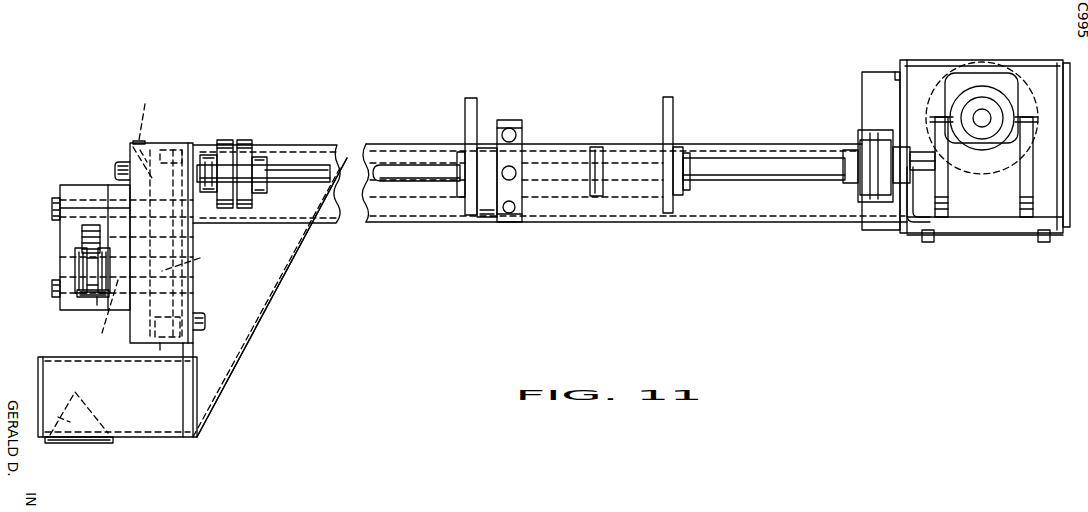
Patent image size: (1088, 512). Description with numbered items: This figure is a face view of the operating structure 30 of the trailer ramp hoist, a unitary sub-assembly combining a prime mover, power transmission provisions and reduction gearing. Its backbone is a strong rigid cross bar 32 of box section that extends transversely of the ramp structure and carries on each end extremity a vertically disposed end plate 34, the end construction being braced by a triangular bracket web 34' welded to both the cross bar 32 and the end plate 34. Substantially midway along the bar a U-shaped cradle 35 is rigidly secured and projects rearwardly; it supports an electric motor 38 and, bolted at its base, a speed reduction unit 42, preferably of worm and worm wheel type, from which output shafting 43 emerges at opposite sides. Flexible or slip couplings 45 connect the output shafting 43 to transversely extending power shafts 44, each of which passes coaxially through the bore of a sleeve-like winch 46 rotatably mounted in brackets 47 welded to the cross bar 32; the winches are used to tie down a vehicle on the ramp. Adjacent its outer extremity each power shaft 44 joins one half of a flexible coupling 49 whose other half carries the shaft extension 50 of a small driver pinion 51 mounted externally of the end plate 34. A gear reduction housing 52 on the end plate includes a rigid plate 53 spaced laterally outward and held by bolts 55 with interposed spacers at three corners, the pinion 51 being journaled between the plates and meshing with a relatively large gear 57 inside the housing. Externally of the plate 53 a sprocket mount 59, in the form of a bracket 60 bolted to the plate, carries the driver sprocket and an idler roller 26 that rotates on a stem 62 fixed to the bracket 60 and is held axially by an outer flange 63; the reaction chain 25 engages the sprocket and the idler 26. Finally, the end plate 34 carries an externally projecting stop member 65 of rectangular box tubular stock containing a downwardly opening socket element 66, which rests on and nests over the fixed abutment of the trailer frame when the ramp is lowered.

The reaction chain 25 is at (80, 238).
The idler roller 26 is at (98, 296).
The operating structure 30 is at (758, 106).
The cross bar 32 is at (606, 224).
The end plate 34 is at (146, 390).
The triangular bracket web 34' is at (270, 291).
The cradle 35 is at (898, 72).
The electric motor 38 is at (1022, 72).
The speed reduction unit 42 is at (975, 217).
The output shafting 43 is at (923, 178).
The power shaft 44 is at (420, 183).
The flexible coupling 45 is at (863, 208).
The sleeve-like winch 46 is at (560, 203).
The bracket 47 is at (468, 114).
The flexible coupling 49 is at (252, 143).
The shaft extension 50 is at (209, 211).
The driver pinion 51 is at (167, 143).
The gear reduction housing 52 is at (166, 350).
The rigid plate 53 is at (128, 158).
The bolt 55 is at (116, 171).
The large gear 57 is at (219, 258).
The sprocket mount 59 is at (70, 180).
The bracket 60 is at (74, 300).
The stem 62 is at (102, 333).
The outer flange 63 is at (73, 267).
The stop member 65 is at (158, 441).
The socket element 66 is at (73, 442).